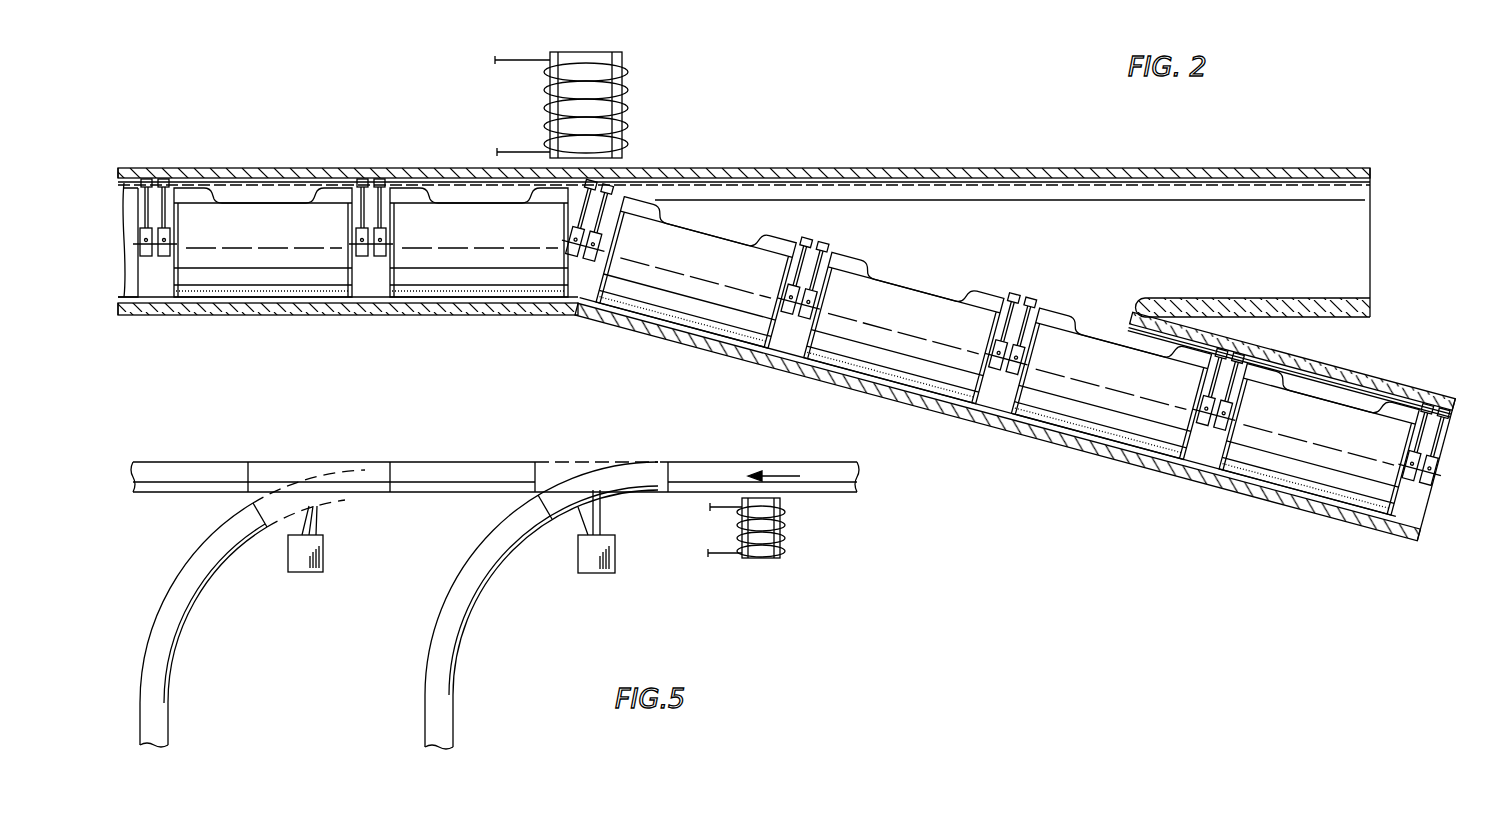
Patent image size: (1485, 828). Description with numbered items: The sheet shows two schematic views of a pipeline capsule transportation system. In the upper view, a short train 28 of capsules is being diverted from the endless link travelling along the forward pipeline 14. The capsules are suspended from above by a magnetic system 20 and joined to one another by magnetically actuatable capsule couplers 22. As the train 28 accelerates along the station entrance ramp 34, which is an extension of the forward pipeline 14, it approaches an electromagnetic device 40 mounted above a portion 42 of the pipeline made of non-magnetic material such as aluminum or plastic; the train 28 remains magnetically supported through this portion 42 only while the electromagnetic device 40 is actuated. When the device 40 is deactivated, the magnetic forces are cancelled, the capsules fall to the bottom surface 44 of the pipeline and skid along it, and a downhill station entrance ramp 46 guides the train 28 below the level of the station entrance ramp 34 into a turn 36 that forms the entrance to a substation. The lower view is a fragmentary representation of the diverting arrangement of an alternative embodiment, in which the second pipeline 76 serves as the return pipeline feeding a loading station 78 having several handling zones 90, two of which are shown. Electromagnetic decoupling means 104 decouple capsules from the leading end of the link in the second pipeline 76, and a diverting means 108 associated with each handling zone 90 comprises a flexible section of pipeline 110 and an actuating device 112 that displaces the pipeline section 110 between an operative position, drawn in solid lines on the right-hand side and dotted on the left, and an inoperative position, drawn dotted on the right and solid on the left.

In FIG. 2, the forward pipeline 14 is at (278, 167).
In FIG. 2, the magnetic system 20 is at (172, 167).
In FIG. 2, the capsule couplers 22 is at (374, 258).
In FIG. 2, the shorter trains of capsules 28 is at (254, 284).
In FIG. 2, the station entrance ramp 34 is at (1258, 167).
In FIG. 2, the turns 36 is at (1358, 524).
In FIG. 2, the electromagnetic device 40 is at (594, 62).
In FIG. 2, the portion of the pipeline 42 is at (740, 242).
In FIG. 2, the bottom surface of the pipeline 44 is at (494, 300).
In FIG. 2, the downhill station entrance ramp 46 is at (890, 415).
In FIG. 5, the second elongated pipeline 76 is at (757, 462).
In FIG. 5, the loading station 78 is at (207, 430).
In FIG. 5, the handling zones 90 is at (165, 707).
In FIG. 5, the electromagnetic decoupling means 104 is at (773, 560).
In FIG. 5, the diverting means 108 is at (346, 450).
In FIG. 5, the flexible section of pipeline 110 is at (282, 462).
In FIG. 5, the actuating device 112 is at (324, 560).